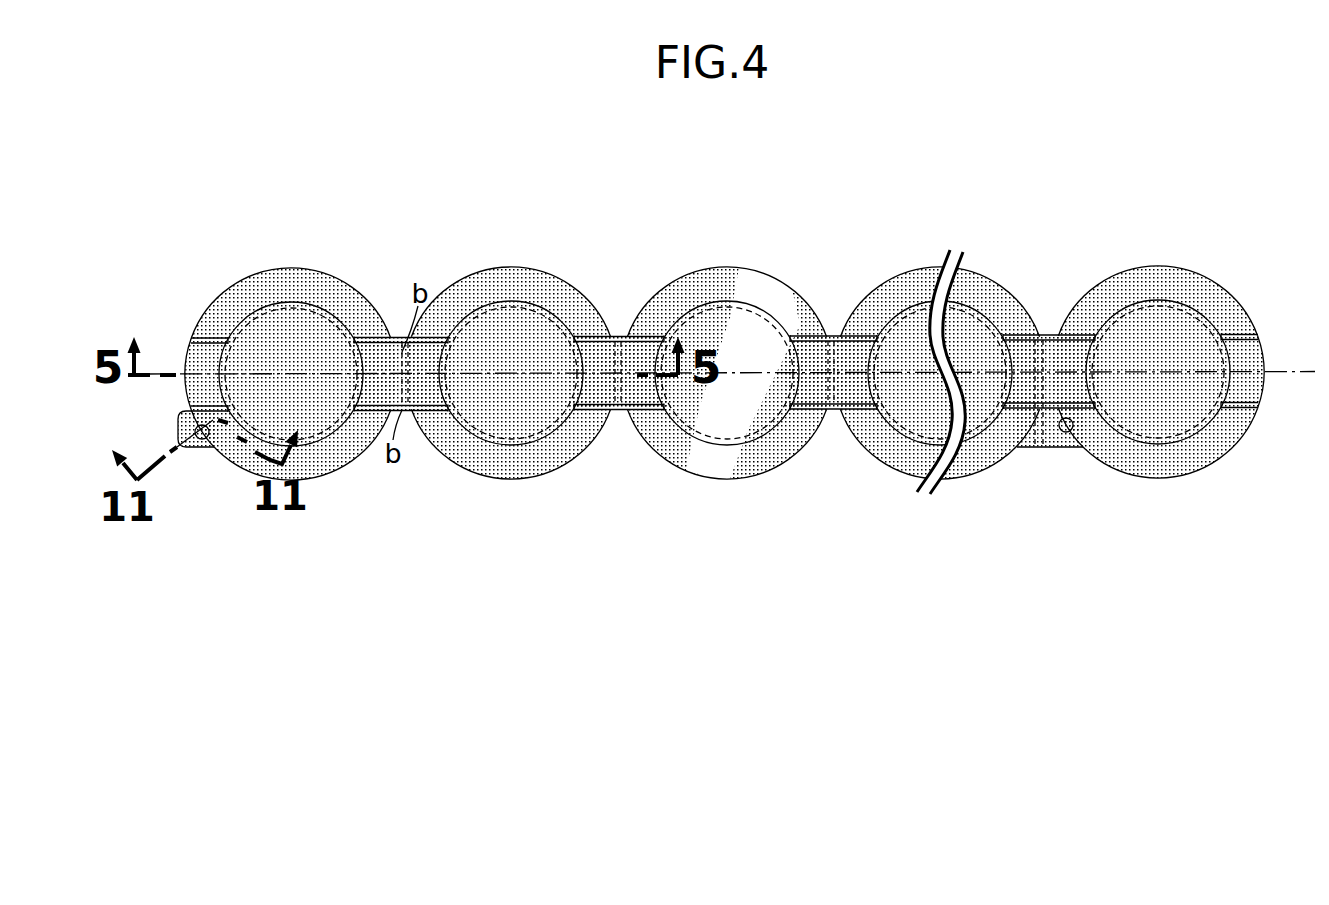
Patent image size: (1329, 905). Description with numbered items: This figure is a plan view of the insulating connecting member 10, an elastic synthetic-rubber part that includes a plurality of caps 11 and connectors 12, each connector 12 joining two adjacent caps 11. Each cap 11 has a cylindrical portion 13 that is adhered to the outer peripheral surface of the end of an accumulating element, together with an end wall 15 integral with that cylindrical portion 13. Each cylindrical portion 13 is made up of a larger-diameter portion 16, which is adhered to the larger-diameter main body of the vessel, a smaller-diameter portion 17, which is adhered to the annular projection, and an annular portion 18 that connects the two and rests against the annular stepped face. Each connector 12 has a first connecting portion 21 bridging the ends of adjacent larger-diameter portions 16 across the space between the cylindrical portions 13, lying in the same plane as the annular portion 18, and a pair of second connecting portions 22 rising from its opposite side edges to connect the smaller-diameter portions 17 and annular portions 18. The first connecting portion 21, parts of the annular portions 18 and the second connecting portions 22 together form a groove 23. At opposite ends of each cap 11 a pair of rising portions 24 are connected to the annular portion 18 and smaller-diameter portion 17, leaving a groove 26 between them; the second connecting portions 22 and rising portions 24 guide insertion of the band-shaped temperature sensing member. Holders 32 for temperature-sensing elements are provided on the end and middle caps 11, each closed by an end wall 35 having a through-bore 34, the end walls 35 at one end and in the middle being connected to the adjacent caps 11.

The insulating connecting member 10 is at (753, 260).
The cap 11 is at (262, 268).
The connector 12 is at (370, 333).
The cylindrical portion 13 is at (289, 268).
The end wall 15 is at (262, 322).
The larger-diameter portion 16 is at (250, 475).
The smaller-diameter portion 17 is at (342, 448).
The annular portion 18 is at (318, 466).
The first connecting portion 21 is at (403, 345).
The second connecting portion 22 is at (437, 333).
The groove 23 is at (370, 360).
The rising portion 24 is at (203, 338).
The groove 26 is at (203, 362).
The holder 32 is at (190, 452).
The through-bore 34 is at (205, 441).
The end wall 35 is at (183, 427).